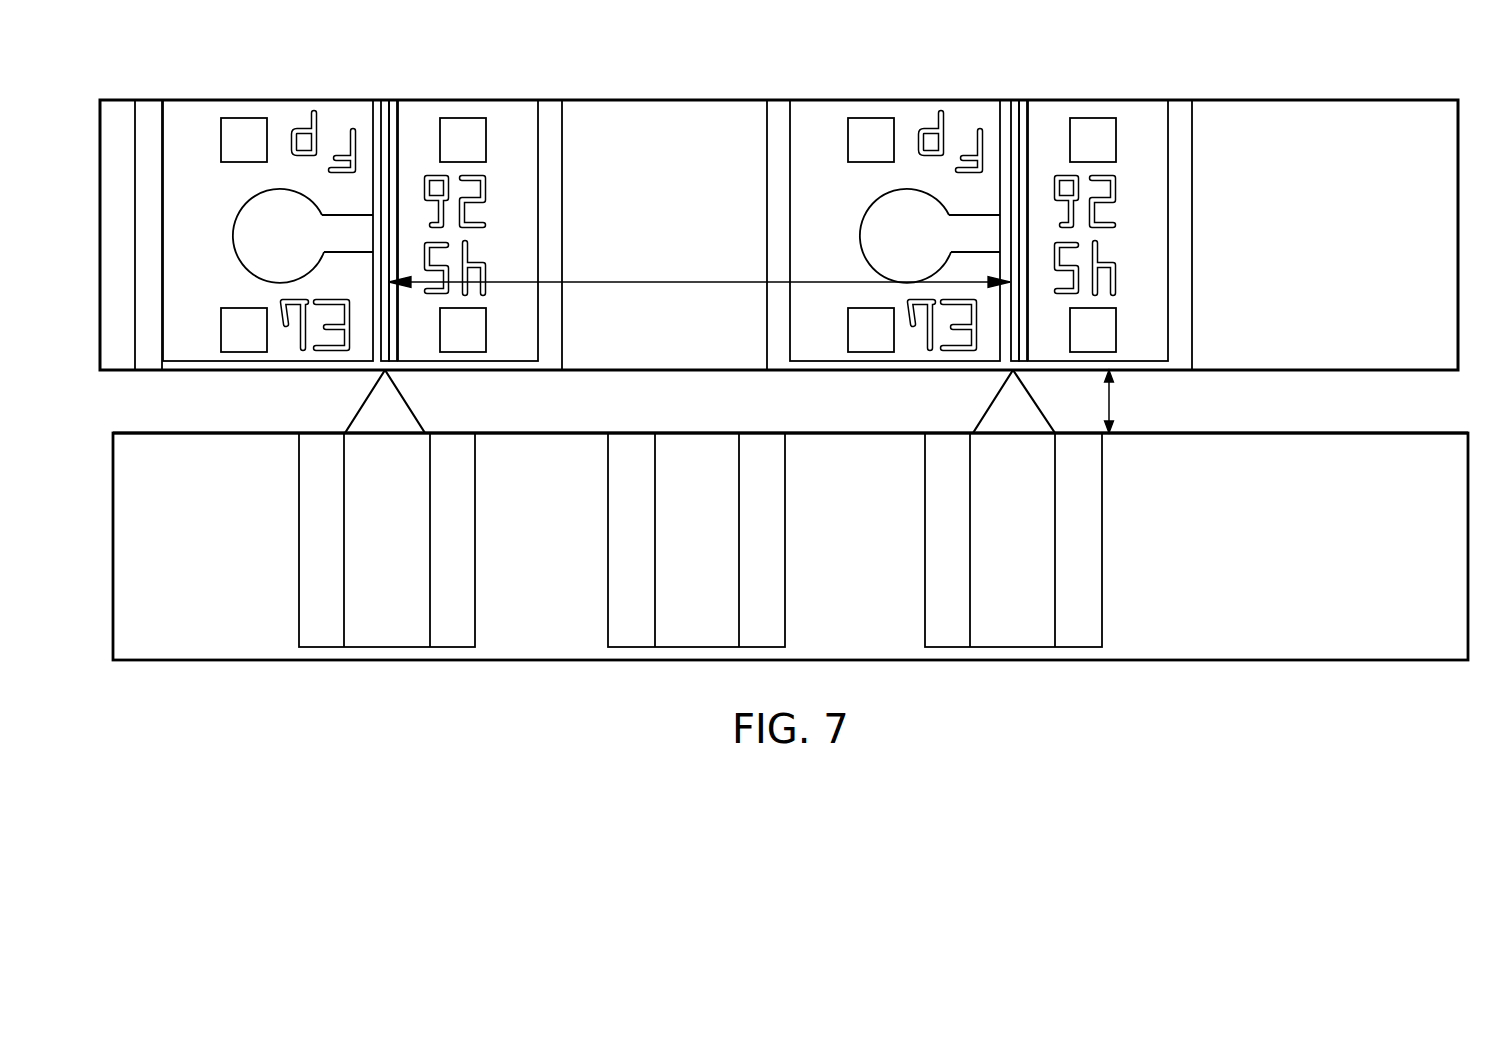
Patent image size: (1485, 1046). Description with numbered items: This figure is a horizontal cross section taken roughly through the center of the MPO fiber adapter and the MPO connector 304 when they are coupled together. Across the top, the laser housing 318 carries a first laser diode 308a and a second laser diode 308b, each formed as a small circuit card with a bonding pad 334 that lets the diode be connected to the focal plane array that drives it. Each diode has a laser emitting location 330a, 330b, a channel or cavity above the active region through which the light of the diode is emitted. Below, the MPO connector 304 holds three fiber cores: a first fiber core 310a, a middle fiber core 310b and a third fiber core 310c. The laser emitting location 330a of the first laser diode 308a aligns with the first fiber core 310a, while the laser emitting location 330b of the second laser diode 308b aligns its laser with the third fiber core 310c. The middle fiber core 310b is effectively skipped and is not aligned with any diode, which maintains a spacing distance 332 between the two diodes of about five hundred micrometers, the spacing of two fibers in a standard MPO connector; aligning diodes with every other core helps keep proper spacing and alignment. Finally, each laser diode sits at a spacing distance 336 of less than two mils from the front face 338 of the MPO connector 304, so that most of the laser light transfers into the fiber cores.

The MPO connector 304 is at (1153, 650).
The first laser diode 308a is at (330, 128).
The second laser diode 308b is at (923, 125).
The first fiber core 310a is at (416, 498).
The middle fiber core 310b is at (728, 498).
The third fiber core 310c is at (1041, 498).
The iCLX laser housing 318 is at (1268, 112).
The laser emitting location 330a is at (385, 122).
The laser emitting location 330b is at (1015, 128).
The spacing distance 332 is at (573, 281).
The bonding pad 334 is at (247, 257).
The spacing distance 336 is at (1107, 405).
The front face 338 is at (243, 433).